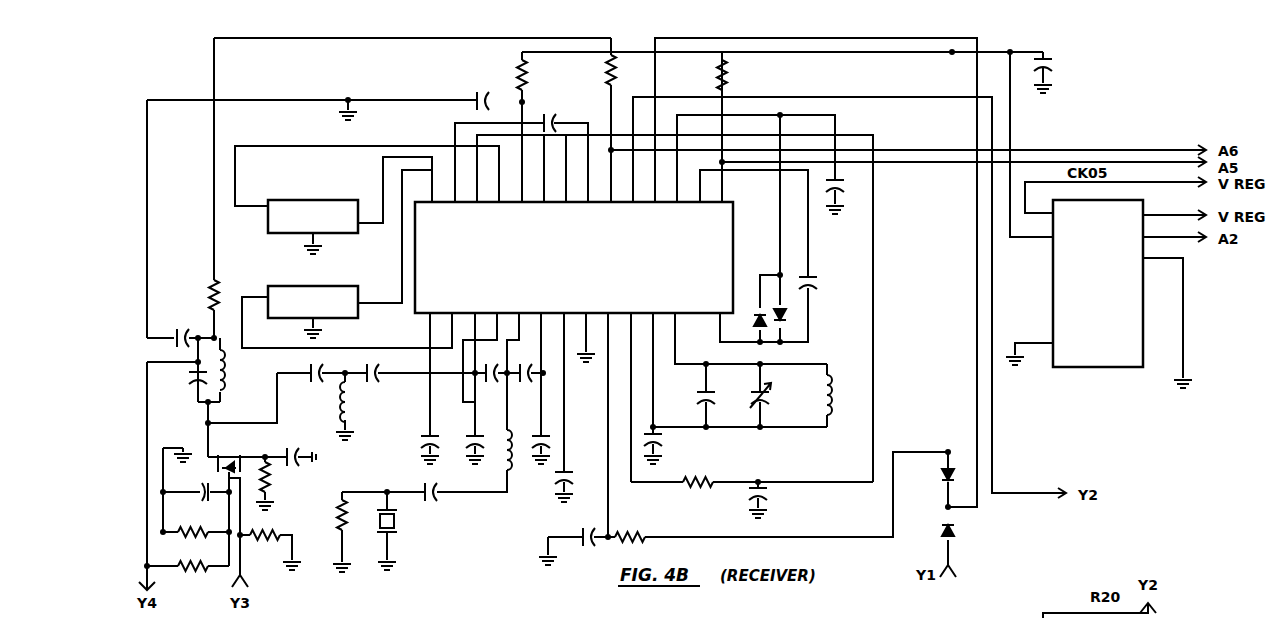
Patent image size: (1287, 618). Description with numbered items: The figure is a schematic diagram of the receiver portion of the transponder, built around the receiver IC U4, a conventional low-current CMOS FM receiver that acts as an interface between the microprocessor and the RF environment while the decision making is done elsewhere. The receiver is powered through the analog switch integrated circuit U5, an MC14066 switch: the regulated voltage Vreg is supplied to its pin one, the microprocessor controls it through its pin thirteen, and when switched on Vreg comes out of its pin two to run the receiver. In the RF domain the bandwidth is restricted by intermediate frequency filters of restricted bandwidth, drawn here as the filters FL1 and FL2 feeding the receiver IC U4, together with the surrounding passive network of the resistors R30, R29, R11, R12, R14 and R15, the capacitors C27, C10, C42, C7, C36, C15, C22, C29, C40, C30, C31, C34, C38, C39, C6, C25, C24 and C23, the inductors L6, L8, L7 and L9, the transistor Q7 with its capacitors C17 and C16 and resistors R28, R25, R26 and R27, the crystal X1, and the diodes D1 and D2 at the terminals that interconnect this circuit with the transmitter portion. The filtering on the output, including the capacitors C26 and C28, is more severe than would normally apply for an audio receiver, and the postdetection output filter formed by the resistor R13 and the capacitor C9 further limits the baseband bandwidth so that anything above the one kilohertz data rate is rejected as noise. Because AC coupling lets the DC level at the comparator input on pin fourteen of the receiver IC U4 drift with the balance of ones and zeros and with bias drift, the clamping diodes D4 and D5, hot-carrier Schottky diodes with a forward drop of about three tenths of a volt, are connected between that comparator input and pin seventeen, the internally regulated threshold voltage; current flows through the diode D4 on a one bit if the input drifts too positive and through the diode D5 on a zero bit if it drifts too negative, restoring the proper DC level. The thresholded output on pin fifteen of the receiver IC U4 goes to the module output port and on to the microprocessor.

The receiver IC U4 is at (574, 263).
The analog switch integrated circuit U5 is at (1100, 281).
The filter FL1 is at (313, 208).
The filter FL2 is at (313, 294).
The capacitor C27 is at (484, 91).
The resistor R29 is at (537, 75).
The resistor R11 is at (627, 71).
The resistor R12 is at (739, 75).
The capacitor C10 is at (567, 118).
The capacitor C42 is at (1061, 68).
The capacitor C28 is at (846, 178).
The capacitor C26 is at (820, 273).
The resistor R30 is at (193, 295).
The capacitor C7 is at (179, 331).
The capacitor C36 is at (177, 381).
The inductor L6 is at (234, 370).
The capacitor C15 is at (303, 368).
The capacitor C22 is at (387, 368).
The inductor L8 is at (355, 402).
The capacitor C29 is at (417, 428).
The capacitor C40 is at (461, 428).
The capacitor C30 is at (484, 382).
The capacitor C31 is at (526, 382).
The capacitor C34 is at (531, 428).
The inductor L7 is at (509, 450).
The capacitor C38 is at (576, 467).
The capacitor C39 is at (449, 499).
The capacitor C6 is at (591, 527).
The resistor R14 is at (631, 528).
The resistor R13 is at (698, 491).
The capacitor C9 is at (772, 497).
The capacitor C25 is at (670, 443).
The capacitor C24 is at (691, 391).
The variable capacitor C23 is at (778, 393).
The inductor L9 is at (841, 395).
The clamping diode D4 is at (750, 327).
The clamping diode D5 is at (789, 324).
The diode D1 is at (936, 475).
The diode D2 is at (932, 534).
The transistor Q7 is at (228, 456).
The capacitor C17 is at (297, 448).
The resistor R28 is at (280, 480).
The capacitor C16 is at (187, 488).
The resistor R25 is at (193, 525).
The resistor R26 is at (194, 558).
The resistor R27 is at (264, 545).
The resistor R15 is at (327, 515).
The crystal X1 is at (399, 525).